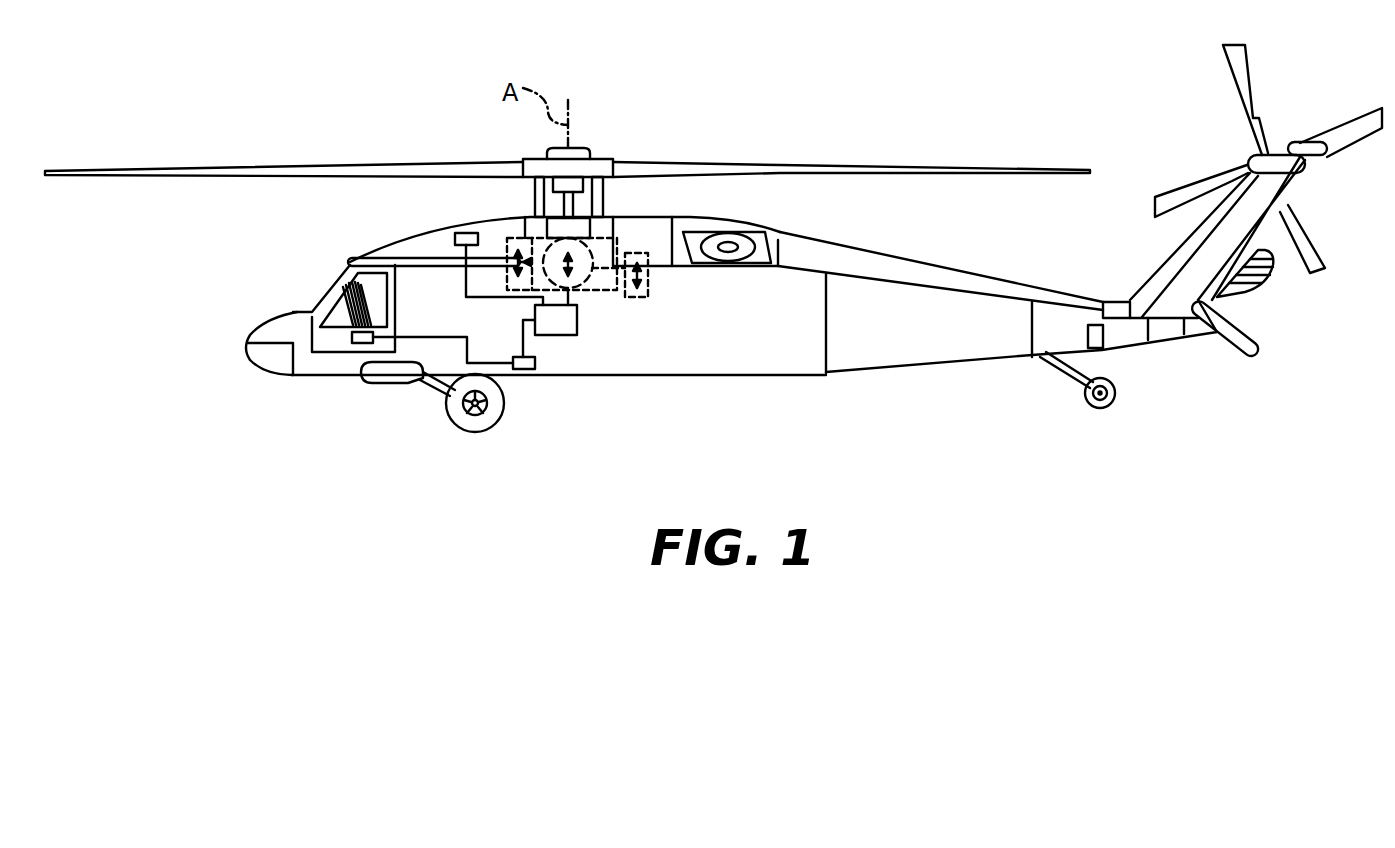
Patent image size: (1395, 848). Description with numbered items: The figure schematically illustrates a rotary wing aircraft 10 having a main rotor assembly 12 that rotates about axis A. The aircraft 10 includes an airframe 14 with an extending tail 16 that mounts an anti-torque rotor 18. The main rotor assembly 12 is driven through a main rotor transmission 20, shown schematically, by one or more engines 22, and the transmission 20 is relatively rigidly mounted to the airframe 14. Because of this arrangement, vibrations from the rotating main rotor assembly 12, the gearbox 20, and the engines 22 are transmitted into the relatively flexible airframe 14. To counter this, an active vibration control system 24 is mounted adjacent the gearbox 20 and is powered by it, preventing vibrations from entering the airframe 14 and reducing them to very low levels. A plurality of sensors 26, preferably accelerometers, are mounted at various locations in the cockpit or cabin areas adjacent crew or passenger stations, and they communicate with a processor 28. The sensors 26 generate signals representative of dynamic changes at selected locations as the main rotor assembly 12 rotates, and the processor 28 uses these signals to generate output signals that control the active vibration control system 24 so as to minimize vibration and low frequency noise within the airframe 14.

The rotary wing aircraft 10 is at (768, 58).
The main rotor assembly 12 is at (600, 137).
The airframe 14 is at (862, 258).
The extending tail 16 is at (1068, 323).
The anti-torque rotor 18 is at (1364, 126).
The main rotor transmission 20 is at (608, 236).
The engines 22 is at (698, 230).
The active vibration control system 24 is at (615, 357).
The sensors 26 is at (466, 232).
The processor 28 is at (558, 335).